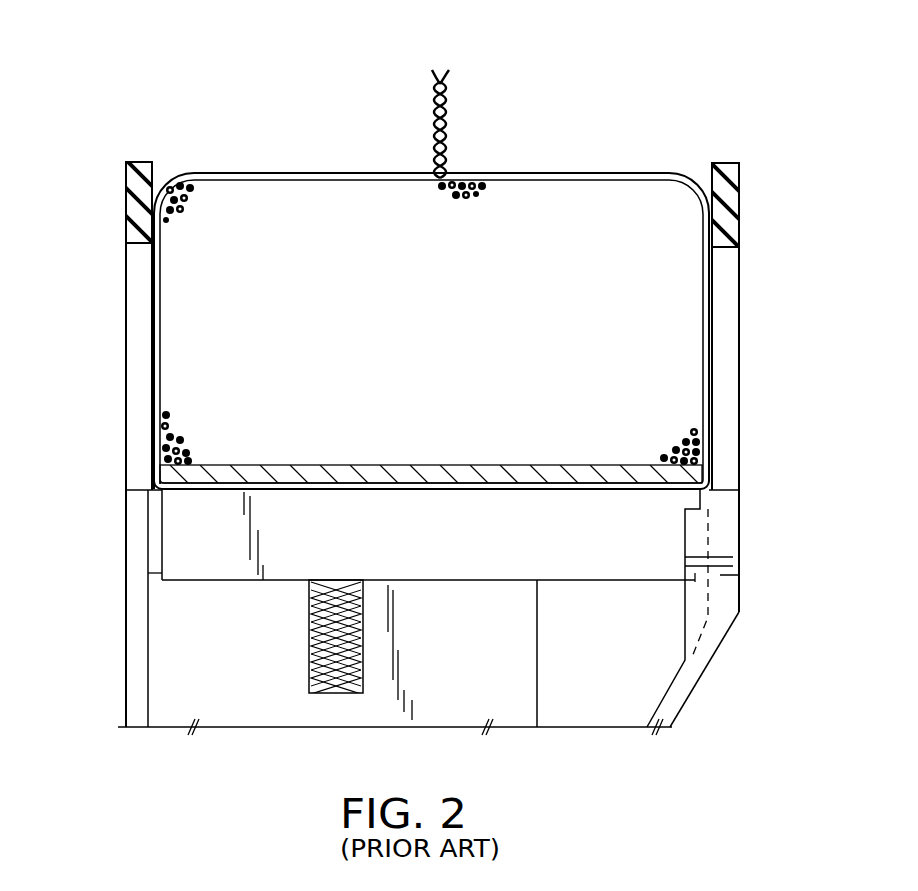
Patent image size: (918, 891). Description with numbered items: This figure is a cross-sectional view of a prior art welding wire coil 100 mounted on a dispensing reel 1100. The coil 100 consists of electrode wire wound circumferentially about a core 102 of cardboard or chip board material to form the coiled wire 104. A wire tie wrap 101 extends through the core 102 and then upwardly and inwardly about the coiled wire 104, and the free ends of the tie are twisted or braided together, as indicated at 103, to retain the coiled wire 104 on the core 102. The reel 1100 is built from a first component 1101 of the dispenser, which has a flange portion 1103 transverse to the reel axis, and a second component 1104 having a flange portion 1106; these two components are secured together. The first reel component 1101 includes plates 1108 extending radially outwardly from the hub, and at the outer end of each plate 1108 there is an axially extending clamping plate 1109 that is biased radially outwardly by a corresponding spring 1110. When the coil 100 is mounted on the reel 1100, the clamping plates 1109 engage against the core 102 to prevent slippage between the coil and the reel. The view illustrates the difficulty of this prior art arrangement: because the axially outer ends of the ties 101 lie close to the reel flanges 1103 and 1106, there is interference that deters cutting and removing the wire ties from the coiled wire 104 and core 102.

The welding wire coil 100 is at (628, 142).
The wire tie wrap 101 is at (528, 176).
The core 102 is at (488, 484).
The twisted or braided tie ends 103 is at (432, 107).
The coiled wire 104 is at (456, 322).
The dispensing reel 1100 is at (821, 81).
The first component of the dispenser 1101 is at (137, 150).
The flange portion 1103 is at (130, 187).
The second component of the reel 1104 is at (731, 150).
The flange portion 1106 is at (733, 210).
The plate 1108 is at (232, 697).
The clamping plate 1109 is at (650, 546).
The spring 1110 is at (360, 660).